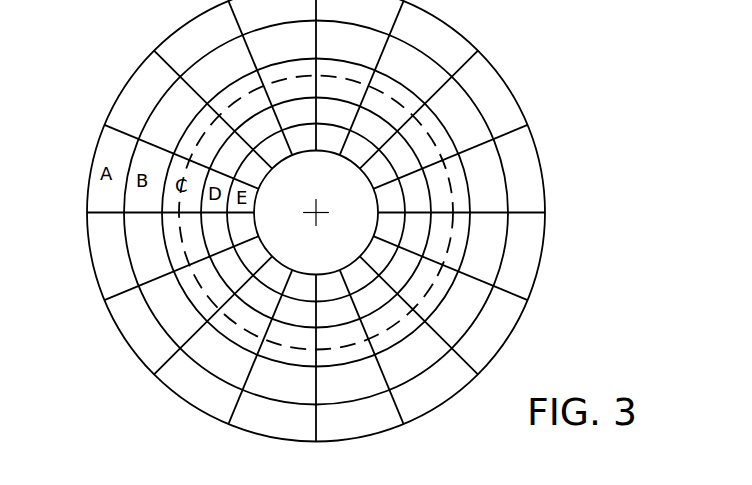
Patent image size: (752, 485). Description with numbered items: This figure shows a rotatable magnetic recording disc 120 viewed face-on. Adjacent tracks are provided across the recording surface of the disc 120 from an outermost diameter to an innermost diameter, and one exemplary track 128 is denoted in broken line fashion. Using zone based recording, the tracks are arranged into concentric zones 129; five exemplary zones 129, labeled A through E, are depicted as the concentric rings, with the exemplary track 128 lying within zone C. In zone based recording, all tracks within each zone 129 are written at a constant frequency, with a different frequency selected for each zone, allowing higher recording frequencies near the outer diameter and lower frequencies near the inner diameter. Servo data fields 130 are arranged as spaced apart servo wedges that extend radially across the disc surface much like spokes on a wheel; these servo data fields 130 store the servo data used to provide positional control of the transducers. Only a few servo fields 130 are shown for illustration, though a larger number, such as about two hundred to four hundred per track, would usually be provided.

The magnetic recording disc 120 is at (124, 59).
The track 128 is at (452, 196).
The concentric zone 129 is at (100, 240).
The servo data field 130 is at (451, 80).